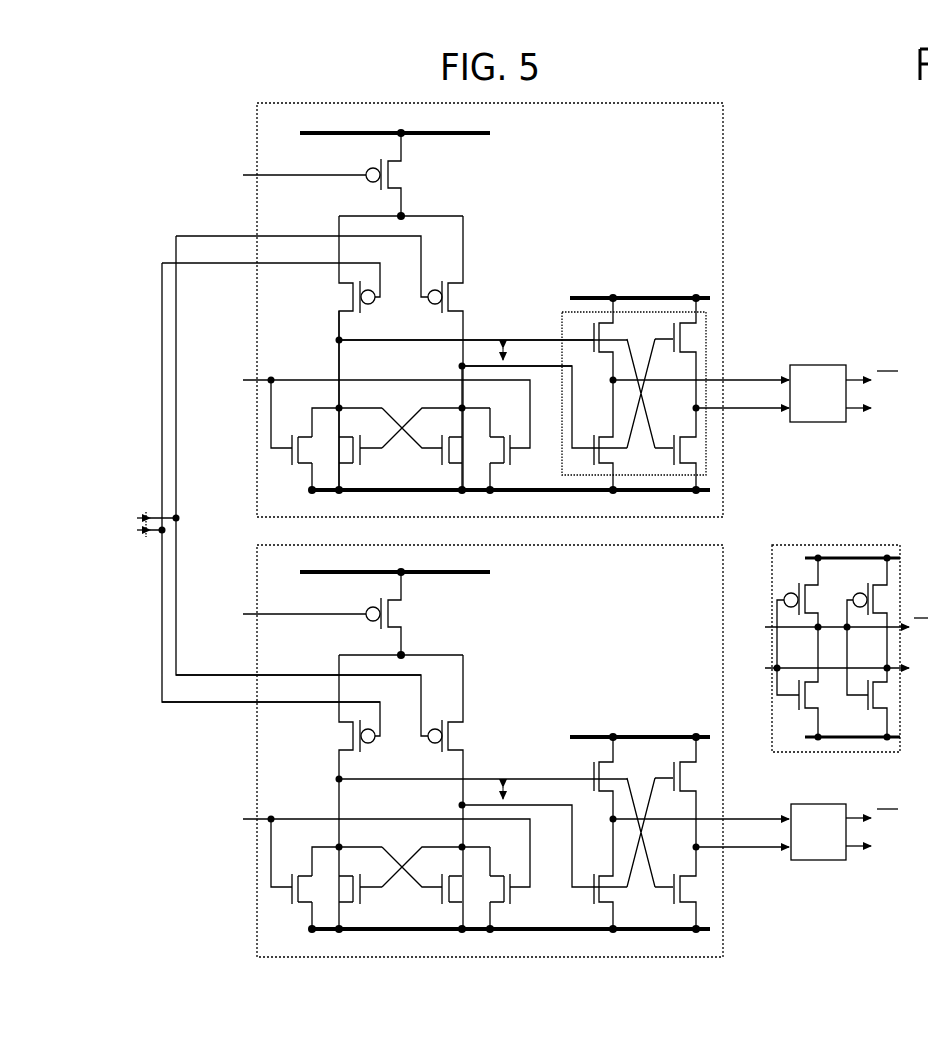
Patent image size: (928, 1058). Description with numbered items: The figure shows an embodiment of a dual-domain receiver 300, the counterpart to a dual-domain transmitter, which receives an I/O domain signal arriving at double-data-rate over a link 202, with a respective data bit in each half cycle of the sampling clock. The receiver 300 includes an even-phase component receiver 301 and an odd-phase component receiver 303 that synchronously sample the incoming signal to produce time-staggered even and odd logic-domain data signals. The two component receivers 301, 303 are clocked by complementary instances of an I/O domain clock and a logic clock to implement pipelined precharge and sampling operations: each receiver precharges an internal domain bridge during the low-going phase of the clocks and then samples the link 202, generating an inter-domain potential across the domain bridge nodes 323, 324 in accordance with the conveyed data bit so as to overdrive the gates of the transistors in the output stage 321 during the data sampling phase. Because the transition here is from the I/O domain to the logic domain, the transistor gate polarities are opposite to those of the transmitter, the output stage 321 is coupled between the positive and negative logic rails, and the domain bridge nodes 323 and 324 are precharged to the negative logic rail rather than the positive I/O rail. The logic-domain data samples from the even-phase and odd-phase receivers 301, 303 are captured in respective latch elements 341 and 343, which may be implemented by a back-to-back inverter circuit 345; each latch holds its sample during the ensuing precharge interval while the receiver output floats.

The dual-domain receiver 300 is at (602, 77).
The even-phase component receiver 301 is at (475, 310).
The odd-phase component receiver 303 is at (475, 751).
The output stage 321 is at (561, 324).
The domain bridge node 323 is at (337, 363).
The domain bridge node 324 is at (460, 364).
The latch element 341 is at (815, 424).
The latch element 343 is at (816, 862).
The back-to-back inverter circuit 345 is at (843, 758).
The link 202 is at (143, 513).